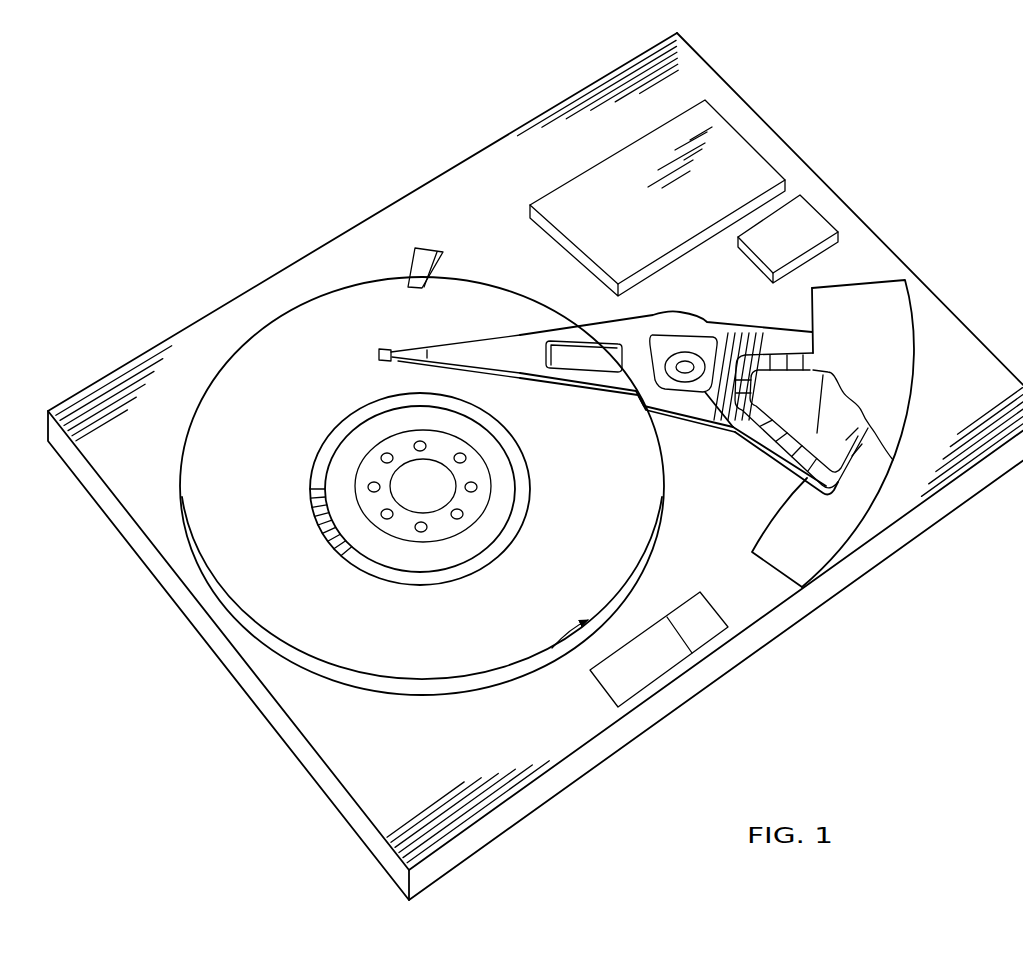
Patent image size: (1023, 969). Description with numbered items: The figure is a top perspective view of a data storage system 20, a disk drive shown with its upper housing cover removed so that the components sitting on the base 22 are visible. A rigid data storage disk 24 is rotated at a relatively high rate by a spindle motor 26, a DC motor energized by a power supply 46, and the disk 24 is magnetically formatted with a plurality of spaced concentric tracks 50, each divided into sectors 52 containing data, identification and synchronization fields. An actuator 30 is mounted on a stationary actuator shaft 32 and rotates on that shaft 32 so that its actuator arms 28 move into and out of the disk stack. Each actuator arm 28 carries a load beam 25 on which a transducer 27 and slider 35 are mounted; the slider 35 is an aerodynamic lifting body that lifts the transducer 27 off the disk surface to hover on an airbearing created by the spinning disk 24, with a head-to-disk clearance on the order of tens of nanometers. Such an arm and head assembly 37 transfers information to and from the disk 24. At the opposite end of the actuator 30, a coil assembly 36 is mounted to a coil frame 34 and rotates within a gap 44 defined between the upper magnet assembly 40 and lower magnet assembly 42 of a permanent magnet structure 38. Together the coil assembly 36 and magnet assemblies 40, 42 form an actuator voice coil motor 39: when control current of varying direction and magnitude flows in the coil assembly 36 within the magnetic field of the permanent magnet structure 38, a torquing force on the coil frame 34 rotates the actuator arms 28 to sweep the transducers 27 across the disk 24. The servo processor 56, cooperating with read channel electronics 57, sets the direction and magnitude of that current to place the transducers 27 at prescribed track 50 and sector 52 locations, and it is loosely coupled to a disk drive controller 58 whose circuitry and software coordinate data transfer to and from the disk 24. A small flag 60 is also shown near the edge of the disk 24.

The data storage system 20 is at (858, 155).
The base plate 22 is at (718, 666).
The data storage disk 24 is at (239, 474).
The load beam 25 is at (403, 357).
The spindle motor 26 is at (440, 512).
The transducer 27 is at (380, 365).
The actuator arm 28 is at (524, 358).
The actuator 30 is at (705, 407).
The actuator shaft 32 is at (685, 360).
The coil frame 34 is at (740, 335).
The slider 35 is at (380, 352).
The coil assembly 36 is at (762, 373).
The actuator assembly 37 is at (678, 423).
The permanent magnet structure 38 is at (848, 428).
The actuator voice coil motor 39 is at (800, 478).
The upper magnet assembly 40 is at (900, 362).
The lower magnet assembly 42 is at (770, 560).
The gap 44 is at (878, 450).
The power supply 46 is at (625, 230).
The track 50 is at (327, 440).
The sector 52 is at (313, 518).
The servo processor 56 is at (670, 659).
The read channel electronics 57 is at (710, 634).
The disk drive controller 58 is at (801, 244).
The flag / ramp 60 is at (432, 243).